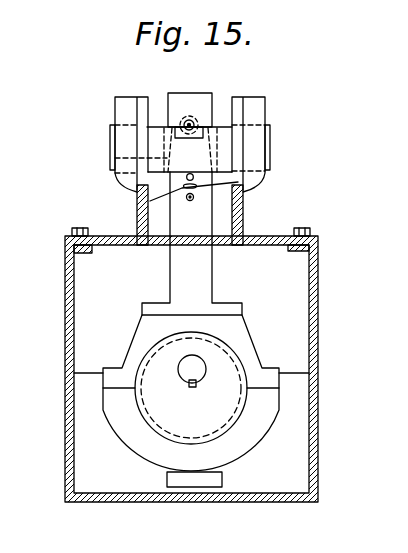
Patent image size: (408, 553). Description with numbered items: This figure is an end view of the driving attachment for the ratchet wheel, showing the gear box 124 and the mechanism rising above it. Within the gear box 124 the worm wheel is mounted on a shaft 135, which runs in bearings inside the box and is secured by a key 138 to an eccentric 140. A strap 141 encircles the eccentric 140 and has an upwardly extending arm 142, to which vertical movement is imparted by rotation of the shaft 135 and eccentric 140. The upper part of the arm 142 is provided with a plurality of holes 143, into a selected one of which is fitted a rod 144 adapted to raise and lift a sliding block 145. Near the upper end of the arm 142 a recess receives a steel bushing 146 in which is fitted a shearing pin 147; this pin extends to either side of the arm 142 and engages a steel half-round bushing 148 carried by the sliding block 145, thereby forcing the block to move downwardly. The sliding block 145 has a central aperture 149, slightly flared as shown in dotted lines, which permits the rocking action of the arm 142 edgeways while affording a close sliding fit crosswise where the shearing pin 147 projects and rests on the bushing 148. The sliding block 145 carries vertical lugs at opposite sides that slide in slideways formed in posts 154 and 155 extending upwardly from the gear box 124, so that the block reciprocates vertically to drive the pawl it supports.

The gear box 124 is at (65, 304).
The shaft 135 is at (192, 370).
The key 138 is at (193, 387).
The eccentric 140 is at (162, 424).
The strap 141 is at (247, 434).
The arm 142 is at (193, 96).
The holes 143 is at (186, 197).
The rod 144 is at (232, 184).
The sliding block 145 is at (220, 139).
The steel bushing 146 is at (195, 119).
The shearing pin 147 is at (183, 120).
The steel half-round bushing 148 is at (176, 131).
The central aperture 149 is at (158, 158).
The post 154 is at (140, 107).
The post 155 is at (243, 105).